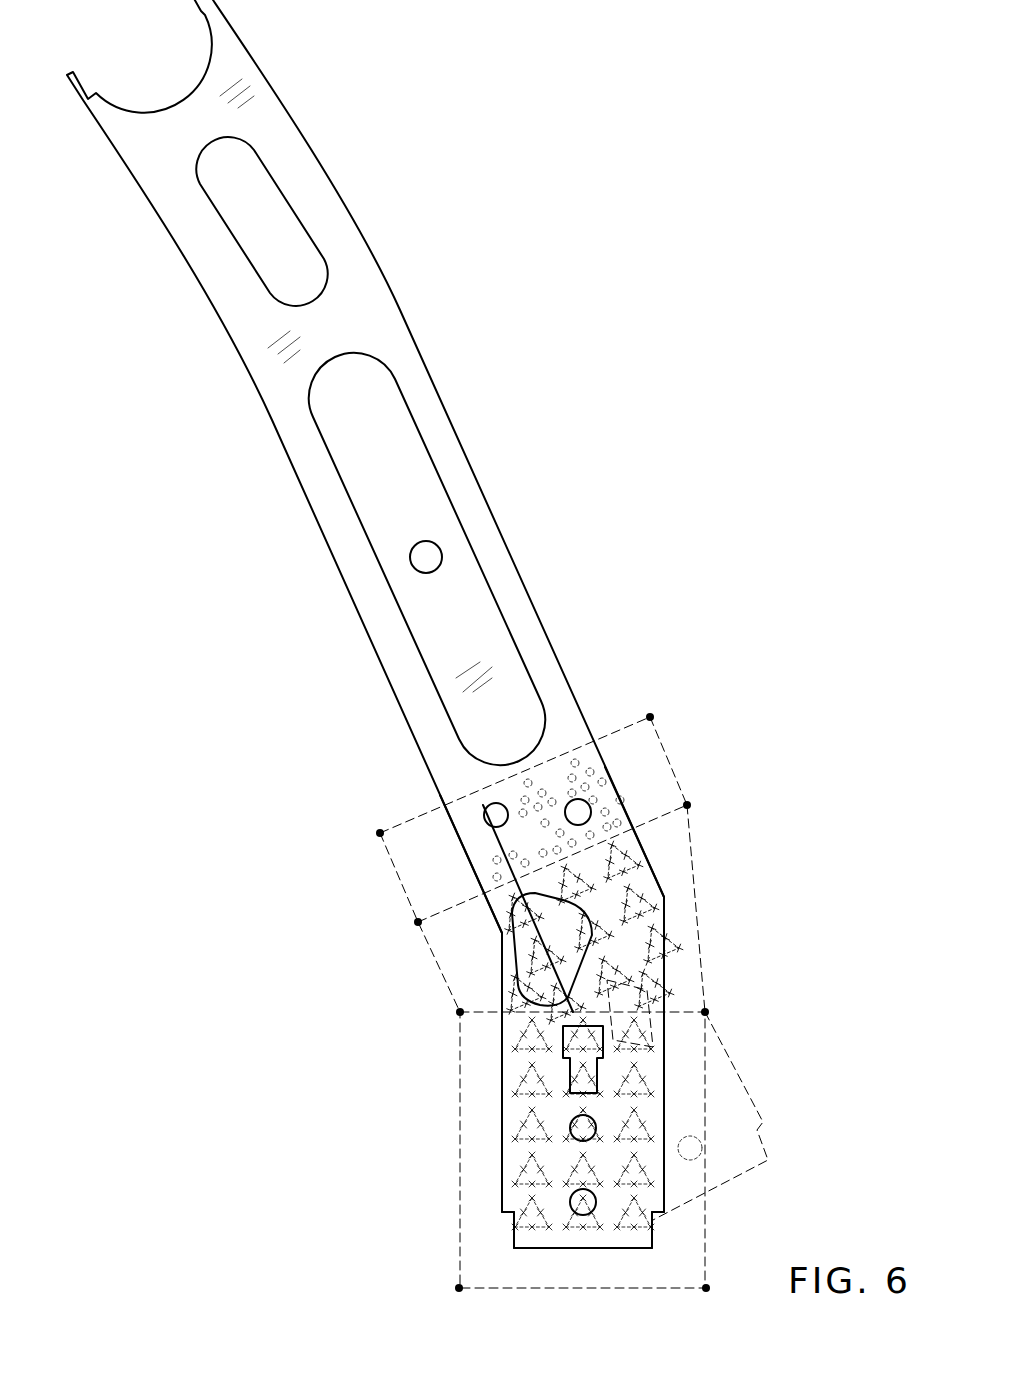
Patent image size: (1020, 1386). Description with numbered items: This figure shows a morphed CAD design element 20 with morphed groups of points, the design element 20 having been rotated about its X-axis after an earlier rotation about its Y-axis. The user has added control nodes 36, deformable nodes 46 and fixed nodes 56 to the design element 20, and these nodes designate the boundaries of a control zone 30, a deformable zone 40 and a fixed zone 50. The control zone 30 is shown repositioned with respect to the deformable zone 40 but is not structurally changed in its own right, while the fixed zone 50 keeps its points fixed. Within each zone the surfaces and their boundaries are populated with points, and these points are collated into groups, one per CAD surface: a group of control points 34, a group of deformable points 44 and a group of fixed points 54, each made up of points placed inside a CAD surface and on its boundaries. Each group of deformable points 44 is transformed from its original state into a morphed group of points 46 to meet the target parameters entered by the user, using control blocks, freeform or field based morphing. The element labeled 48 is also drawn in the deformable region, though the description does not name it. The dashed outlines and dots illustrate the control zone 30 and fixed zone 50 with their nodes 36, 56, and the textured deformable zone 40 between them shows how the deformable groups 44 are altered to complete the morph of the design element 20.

The CAD design element 20 is at (468, 446).
The control zone 30 is at (478, 1167).
The group of control points 34 is at (523, 1110).
The control nodes 36 is at (705, 1012).
The deformable zone 40 is at (683, 892).
The group of deformable points 44 is at (633, 823).
The deformable nodes 46 is at (687, 805).
The opening 48 is at (653, 977).
The fixed zone 50 is at (652, 768).
The group of fixed points 54 is at (485, 822).
The fixed nodes 56 is at (650, 717).